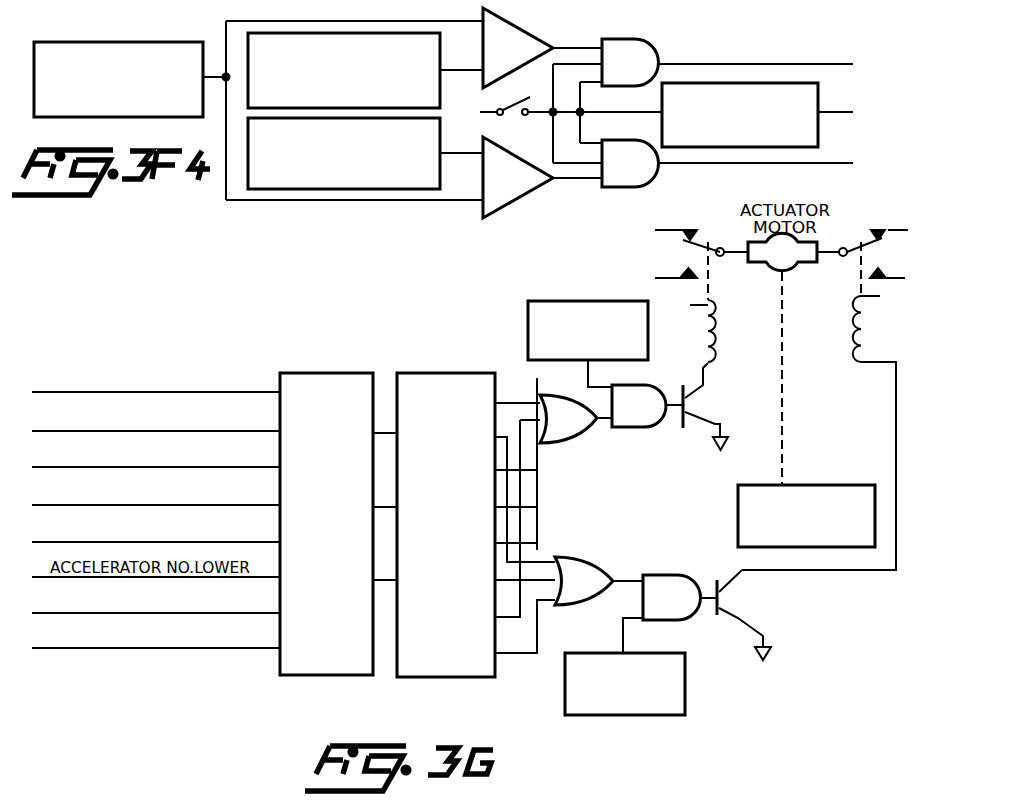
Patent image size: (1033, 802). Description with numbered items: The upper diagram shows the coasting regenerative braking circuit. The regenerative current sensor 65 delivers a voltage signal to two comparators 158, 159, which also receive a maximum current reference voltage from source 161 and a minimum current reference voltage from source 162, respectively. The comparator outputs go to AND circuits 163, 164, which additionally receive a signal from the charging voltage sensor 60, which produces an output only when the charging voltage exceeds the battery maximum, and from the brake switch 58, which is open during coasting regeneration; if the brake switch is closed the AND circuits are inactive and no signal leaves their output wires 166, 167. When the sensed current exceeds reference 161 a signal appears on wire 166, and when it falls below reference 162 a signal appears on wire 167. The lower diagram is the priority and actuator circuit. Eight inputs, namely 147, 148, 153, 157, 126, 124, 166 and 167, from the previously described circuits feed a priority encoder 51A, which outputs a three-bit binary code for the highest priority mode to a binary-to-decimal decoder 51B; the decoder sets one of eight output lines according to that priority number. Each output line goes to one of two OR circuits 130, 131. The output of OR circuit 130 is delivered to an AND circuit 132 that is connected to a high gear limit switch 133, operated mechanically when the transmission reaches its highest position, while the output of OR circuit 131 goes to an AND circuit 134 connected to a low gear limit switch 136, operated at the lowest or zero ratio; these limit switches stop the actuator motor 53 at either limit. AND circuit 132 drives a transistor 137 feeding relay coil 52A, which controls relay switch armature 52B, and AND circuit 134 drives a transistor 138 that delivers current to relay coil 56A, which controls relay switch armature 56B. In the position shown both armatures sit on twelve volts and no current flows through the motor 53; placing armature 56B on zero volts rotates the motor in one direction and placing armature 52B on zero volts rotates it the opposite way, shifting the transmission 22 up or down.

In FIG. 3F4, the current sensor 65 is at (146, 42).
In FIG. 3F4, the maximum current reference source 161 is at (440, 98).
In FIG. 3F4, the minimum current reference source 162 is at (440, 134).
In FIG. 3F4, the comparator 158 is at (531, 38).
In FIG. 3F4, the comparator 159 is at (521, 200).
In FIG. 3F4, the brake switch 58 is at (510, 100).
In FIG. 3F4, the AND circuit 163 is at (655, 46).
In FIG. 3F4, the AND circuit 164 is at (655, 179).
In FIG. 3F4, the charging voltage sensor 60 is at (820, 106).
In FIG. 3F4, the wire 166 is at (812, 64).
In FIG. 3G, the wire 166 is at (43, 617).
In FIG. 3F4, the wire 167 is at (840, 163).
In FIG. 3G, the wire 167 is at (140, 650).
In FIG. 3G, the input 147 is at (33, 392).
In FIG. 3G, the input 148 is at (33, 431).
In FIG. 3G, the input 153 is at (33, 467).
In FIG. 3G, the input 157 is at (54, 504).
In FIG. 3G, the input 126 is at (54, 541).
In FIG. 3G, the input 124 is at (42, 582).
In FIG. 3G, the priority encoder 51A is at (325, 677).
In FIG. 3G, the binary-to-decimal decoder 51B is at (445, 677).
In FIG. 3G, the OR circuit 130 is at (578, 440).
In FIG. 3G, the OR circuit 131 is at (588, 549).
In FIG. 3G, the AND circuit 132 is at (655, 428).
In FIG. 3G, the AND circuit 134 is at (672, 575).
In FIG. 3G, the high gear limit switch 133 is at (527, 312).
In FIG. 3G, the low gear limit switch 136 is at (687, 695).
In FIG. 3G, the transistor 137 is at (690, 403).
In FIG. 3G, the transistor 138 is at (722, 594).
In FIG. 3G, the relay coil 52A is at (722, 338).
In FIG. 3G, the relay switch armature 52B is at (700, 250).
In FIG. 3G, the relay coil 56A is at (848, 326).
In FIG. 3G, the relay switch armature 56B is at (856, 256).
In FIG. 3G, the actuator motor 53 is at (786, 271).
In FIG. 3G, the transmission 22 is at (738, 492).